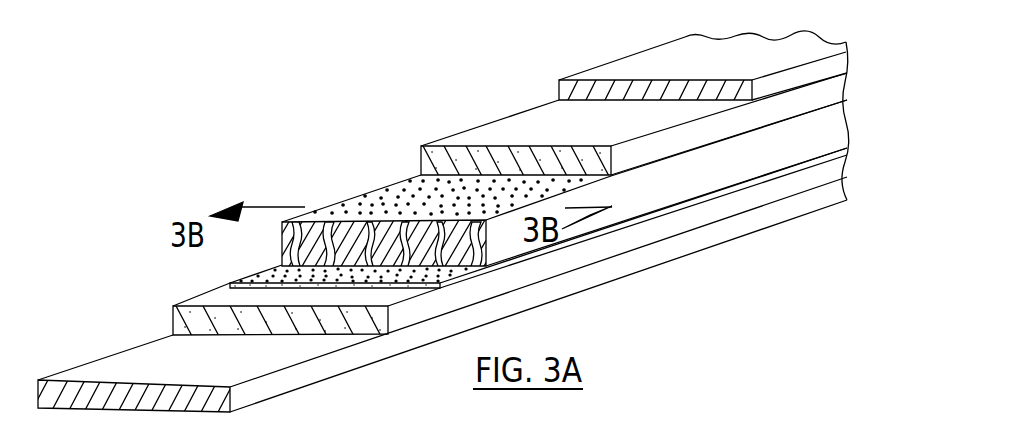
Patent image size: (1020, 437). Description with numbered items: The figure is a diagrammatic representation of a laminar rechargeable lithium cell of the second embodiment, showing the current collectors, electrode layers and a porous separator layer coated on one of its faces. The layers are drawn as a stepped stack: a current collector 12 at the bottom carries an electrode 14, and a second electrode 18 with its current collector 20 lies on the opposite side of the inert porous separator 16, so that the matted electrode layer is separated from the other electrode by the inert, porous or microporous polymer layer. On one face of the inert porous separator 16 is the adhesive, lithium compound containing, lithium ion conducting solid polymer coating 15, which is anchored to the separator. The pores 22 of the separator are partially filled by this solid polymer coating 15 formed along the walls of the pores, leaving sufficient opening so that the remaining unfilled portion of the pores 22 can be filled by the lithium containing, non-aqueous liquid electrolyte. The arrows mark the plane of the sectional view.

The current collector 12 is at (118, 363).
The electrode 14 is at (210, 298).
The solid polymer coating 15 is at (267, 277).
The inert porous separator 16 is at (370, 202).
The electrode 18 is at (508, 130).
The current collector 20 is at (632, 70).
The pores 22 is at (286, 260).